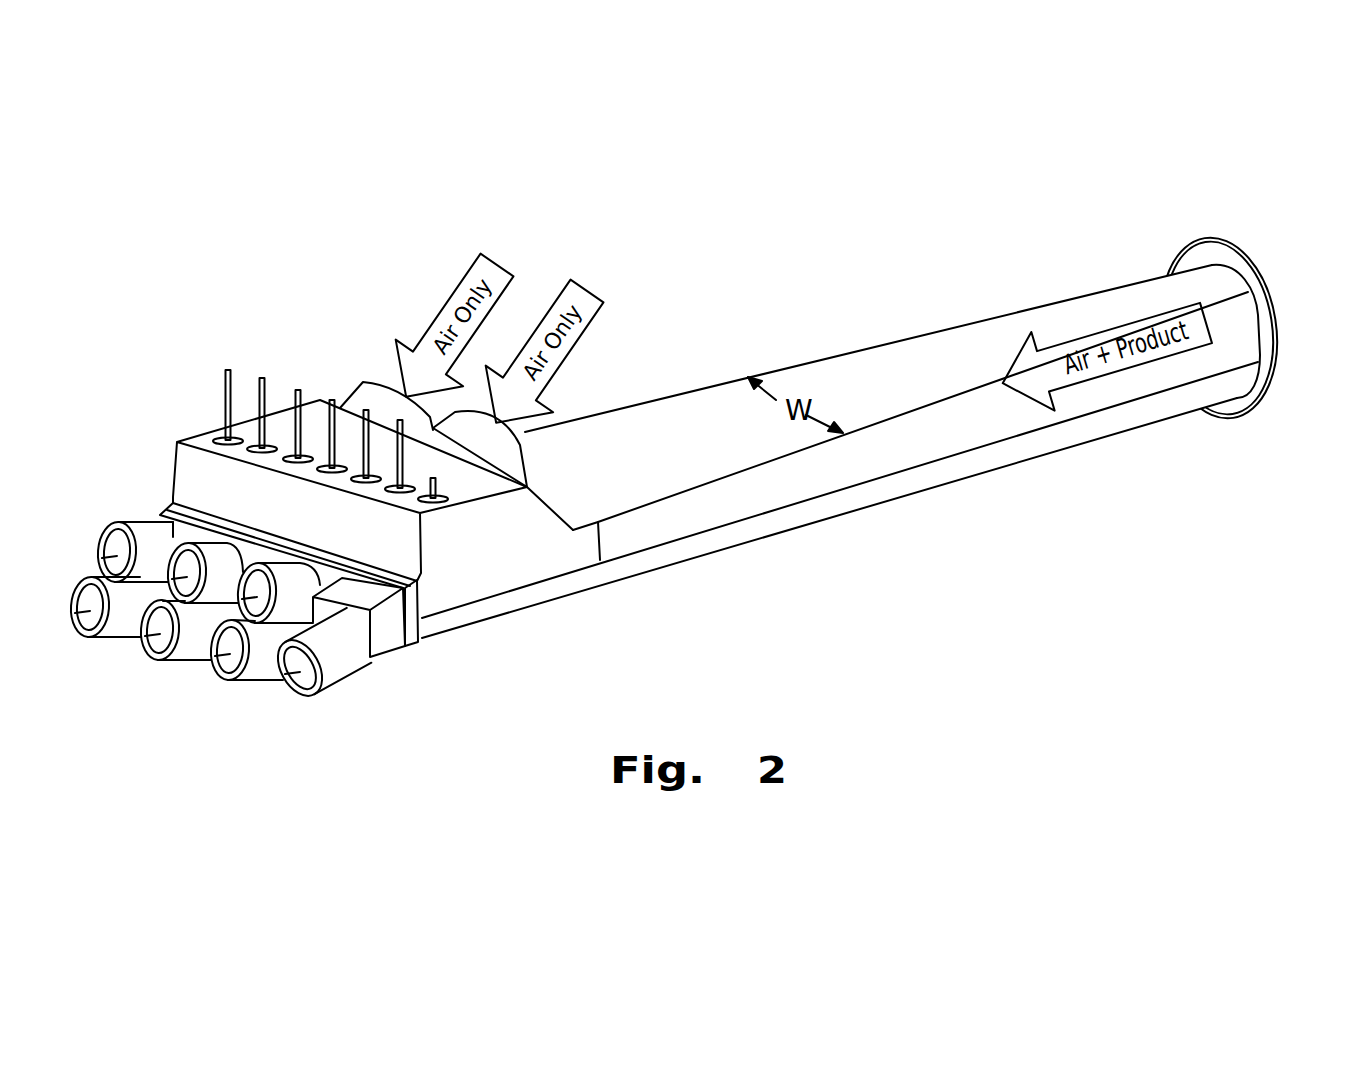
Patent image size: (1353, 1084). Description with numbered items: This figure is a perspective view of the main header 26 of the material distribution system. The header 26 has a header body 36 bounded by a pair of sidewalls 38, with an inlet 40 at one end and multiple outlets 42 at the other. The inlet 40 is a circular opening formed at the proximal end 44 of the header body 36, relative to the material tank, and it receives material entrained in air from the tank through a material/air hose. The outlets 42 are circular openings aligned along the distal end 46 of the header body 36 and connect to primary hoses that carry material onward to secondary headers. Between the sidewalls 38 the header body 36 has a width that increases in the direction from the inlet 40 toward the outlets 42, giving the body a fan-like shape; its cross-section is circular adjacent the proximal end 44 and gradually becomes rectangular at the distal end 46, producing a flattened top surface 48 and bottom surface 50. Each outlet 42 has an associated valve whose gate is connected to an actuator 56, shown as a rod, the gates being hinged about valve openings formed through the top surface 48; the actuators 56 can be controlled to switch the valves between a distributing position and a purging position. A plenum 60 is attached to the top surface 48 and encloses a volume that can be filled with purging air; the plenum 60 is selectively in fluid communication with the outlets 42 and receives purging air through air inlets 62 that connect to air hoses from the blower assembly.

The main header 26 is at (700, 352).
The header body 36 is at (1000, 314).
The sidewalls 38 is at (870, 347).
The inlet 40 is at (1272, 300).
The outlets 42 is at (158, 637).
The proximal end 44 is at (1205, 257).
The distal end 46 is at (416, 630).
The top surface 48 is at (699, 457).
The bottom surface 50 is at (708, 555).
The actuator 56 is at (420, 500).
The plenum 60 is at (520, 518).
The air inlets 62 is at (380, 384).